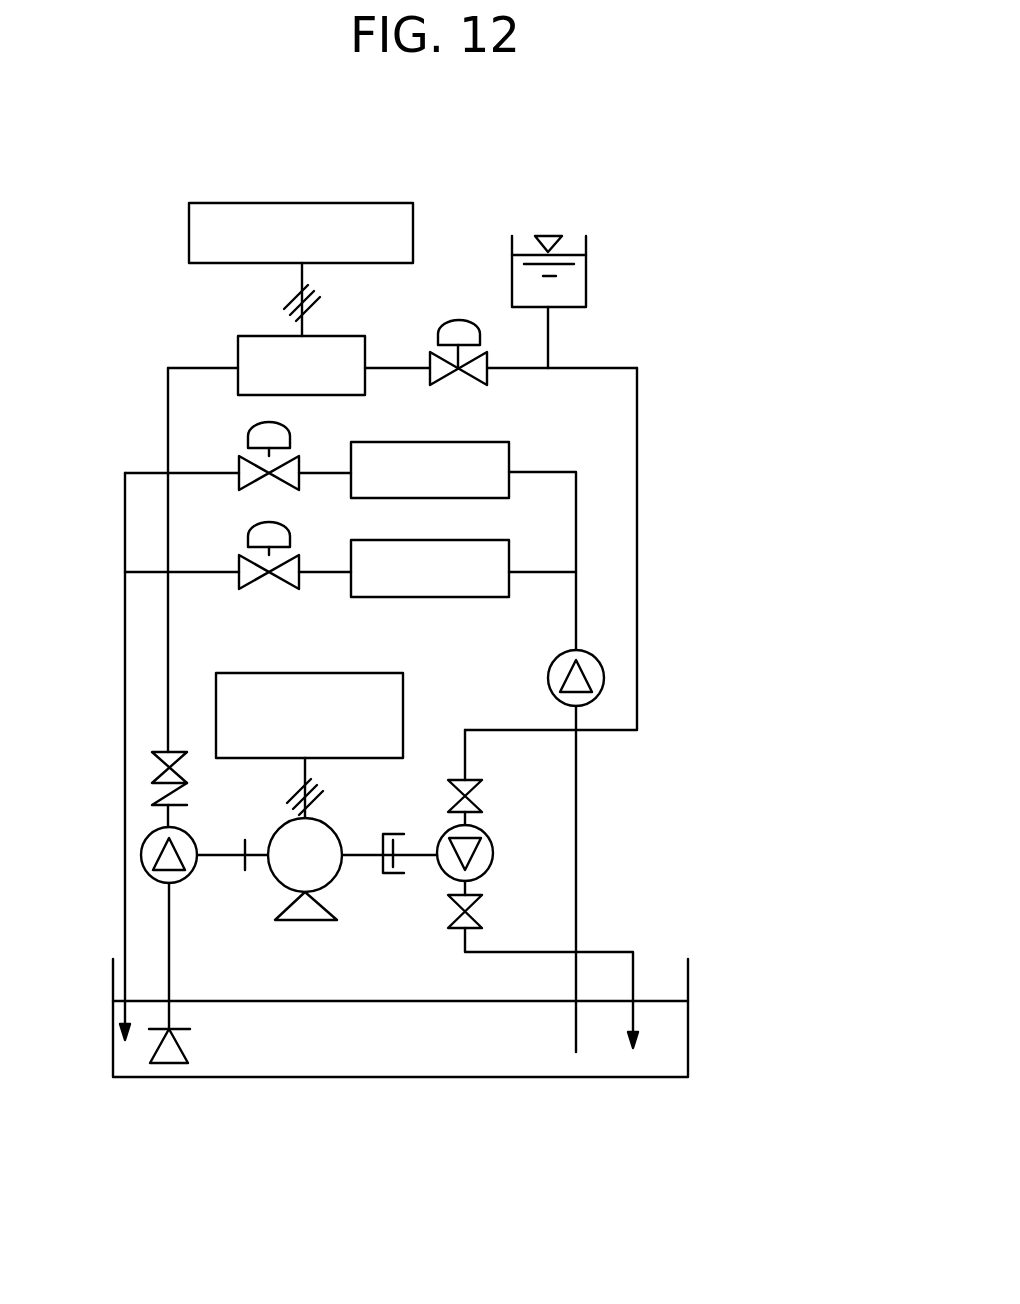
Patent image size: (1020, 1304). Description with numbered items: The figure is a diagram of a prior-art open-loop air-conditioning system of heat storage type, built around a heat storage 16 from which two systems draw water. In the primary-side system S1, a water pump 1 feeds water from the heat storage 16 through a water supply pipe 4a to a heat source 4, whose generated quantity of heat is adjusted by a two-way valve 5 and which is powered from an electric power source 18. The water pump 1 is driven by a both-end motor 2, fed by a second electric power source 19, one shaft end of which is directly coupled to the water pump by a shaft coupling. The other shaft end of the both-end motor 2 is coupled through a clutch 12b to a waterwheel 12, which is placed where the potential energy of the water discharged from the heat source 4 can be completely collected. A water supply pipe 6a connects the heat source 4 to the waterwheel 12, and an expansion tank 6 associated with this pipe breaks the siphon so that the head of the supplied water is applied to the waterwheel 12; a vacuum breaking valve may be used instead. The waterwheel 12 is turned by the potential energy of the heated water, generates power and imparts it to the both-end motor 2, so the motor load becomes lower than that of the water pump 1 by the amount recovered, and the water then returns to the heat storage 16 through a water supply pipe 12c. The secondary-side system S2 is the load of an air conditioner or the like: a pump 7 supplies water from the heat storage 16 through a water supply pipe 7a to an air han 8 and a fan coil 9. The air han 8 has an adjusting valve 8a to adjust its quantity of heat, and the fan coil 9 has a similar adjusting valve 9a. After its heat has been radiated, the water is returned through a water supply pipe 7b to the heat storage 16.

The electric power source 18 is at (380, 203).
The heat source 4 is at (355, 336).
The two-way valve 5 is at (458, 318).
The expansion tank 6 is at (586, 286).
The water supply pipe 6a is at (637, 582).
The adjusting valve 8a is at (290, 440).
The air han (air handling unit) 8 is at (509, 451).
The adjusting valve 9a is at (290, 540).
The fan coil 9 is at (509, 551).
The pump 7 is at (590, 650).
The water supply pipe 7a is at (578, 797).
The water supply pipe 7b is at (125, 762).
The electric power source 19 is at (366, 673).
The water supply pipe 4a is at (184, 752).
The water pump 1 is at (125, 855).
The both-end motor 2 is at (332, 830).
The waterwheel 12 is at (490, 841).
The clutch 12b is at (392, 873).
The water supply pipe 12c is at (640, 958).
The heat storage 16 is at (270, 1080).
The primary-side system S1 is at (637, 462).
The secondary-side system S2 is at (578, 851).